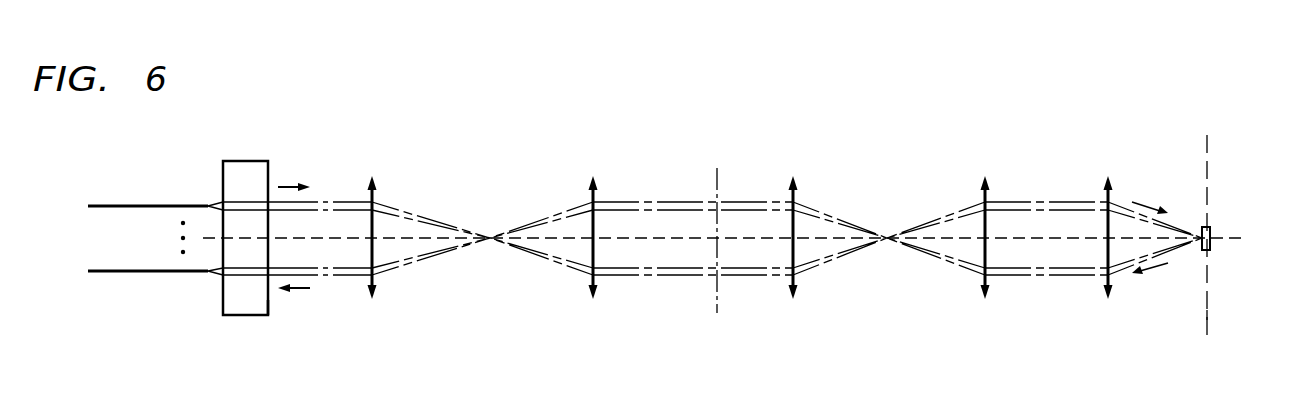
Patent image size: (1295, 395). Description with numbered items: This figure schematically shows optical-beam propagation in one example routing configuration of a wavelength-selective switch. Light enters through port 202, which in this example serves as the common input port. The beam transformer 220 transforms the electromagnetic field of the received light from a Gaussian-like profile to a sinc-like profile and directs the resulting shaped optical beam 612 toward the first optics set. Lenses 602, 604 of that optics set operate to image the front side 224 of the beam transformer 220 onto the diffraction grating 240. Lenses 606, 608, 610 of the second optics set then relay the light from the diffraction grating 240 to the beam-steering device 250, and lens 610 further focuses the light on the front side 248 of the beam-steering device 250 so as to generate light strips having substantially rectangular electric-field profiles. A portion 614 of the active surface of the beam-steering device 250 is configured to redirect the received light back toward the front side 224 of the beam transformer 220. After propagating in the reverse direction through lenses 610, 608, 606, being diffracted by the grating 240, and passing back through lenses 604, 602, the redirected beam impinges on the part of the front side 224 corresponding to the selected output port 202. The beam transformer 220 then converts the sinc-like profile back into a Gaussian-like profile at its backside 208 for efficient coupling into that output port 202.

The port 202 is at (94, 271).
The beam transformer 220 is at (247, 161).
The backside 208 is at (214, 313).
The front side 224 is at (277, 313).
The shaped optical beam 612 is at (350, 198).
The lens 602 is at (377, 278).
The lens 604 is at (588, 278).
The lens 606 is at (797, 278).
The lens 608 is at (980, 278).
The lens 610 is at (1112, 279).
The diffraction grating 240 is at (715, 301).
The front side 248 is at (1202, 152).
The portion of the active surface 614 is at (1212, 230).
The beam-steering device 250 is at (1208, 316).